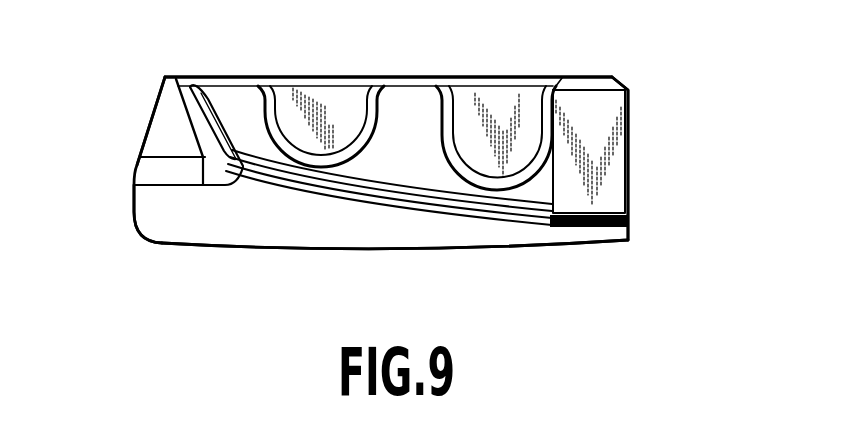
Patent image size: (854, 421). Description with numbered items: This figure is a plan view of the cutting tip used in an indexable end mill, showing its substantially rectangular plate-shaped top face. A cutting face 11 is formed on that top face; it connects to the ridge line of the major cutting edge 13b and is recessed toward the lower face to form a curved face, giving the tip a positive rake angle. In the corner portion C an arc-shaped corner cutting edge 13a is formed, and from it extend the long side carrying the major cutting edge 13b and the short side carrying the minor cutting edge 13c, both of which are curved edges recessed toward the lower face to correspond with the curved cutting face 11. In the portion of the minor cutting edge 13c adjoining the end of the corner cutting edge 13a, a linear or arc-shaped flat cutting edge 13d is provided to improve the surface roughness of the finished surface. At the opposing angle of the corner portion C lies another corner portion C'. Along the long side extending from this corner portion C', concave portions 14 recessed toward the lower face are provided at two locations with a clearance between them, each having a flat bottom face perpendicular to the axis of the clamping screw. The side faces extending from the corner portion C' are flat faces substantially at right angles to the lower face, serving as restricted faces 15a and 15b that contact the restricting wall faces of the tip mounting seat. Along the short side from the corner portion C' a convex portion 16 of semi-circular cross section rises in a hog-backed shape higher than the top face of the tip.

The cutting face 11 is at (262, 213).
The corner cutting edge 13a is at (140, 225).
The major cutting edge 13b is at (373, 252).
The minor cutting edge 13c is at (148, 133).
The flat cutting edge 13d is at (133, 192).
The concave portions 14 is at (484, 127).
The restricted face 15a is at (402, 90).
The restricted face 15b is at (630, 137).
The convex portion 16 is at (603, 173).
The corner portion C is at (111, 266).
The another corner portion C' is at (658, 50).